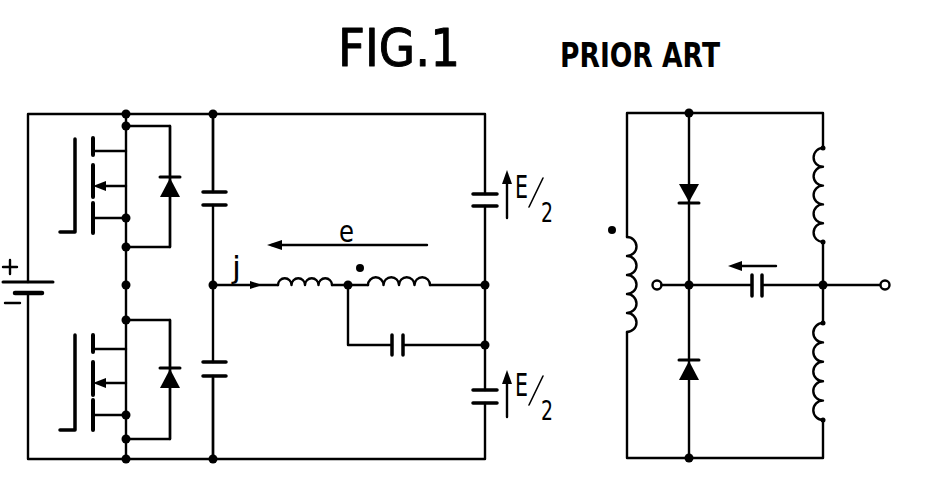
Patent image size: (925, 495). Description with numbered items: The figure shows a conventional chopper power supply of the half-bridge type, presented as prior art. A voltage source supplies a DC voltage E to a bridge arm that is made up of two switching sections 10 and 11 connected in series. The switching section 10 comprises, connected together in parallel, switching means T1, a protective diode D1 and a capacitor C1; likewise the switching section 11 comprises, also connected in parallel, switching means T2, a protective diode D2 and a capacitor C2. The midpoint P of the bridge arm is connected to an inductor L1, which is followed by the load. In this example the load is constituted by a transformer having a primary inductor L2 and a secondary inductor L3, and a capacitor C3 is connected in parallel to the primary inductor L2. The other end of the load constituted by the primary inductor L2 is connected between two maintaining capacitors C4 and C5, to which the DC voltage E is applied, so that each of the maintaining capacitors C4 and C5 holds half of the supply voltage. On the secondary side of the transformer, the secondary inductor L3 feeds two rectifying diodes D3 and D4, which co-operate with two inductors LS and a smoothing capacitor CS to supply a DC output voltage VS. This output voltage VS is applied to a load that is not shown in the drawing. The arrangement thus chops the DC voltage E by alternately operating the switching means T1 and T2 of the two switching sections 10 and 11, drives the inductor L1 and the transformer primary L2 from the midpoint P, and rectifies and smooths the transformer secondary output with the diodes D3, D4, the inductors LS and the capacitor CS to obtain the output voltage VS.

The switching means T1 is at (72, 178).
The switching means T2 is at (72, 392).
The protective diode D1 is at (180, 190).
The protective diode D2 is at (180, 390).
The DC voltage E is at (46, 282).
The midpoint P is at (120, 279).
The switching section 10 is at (230, 162).
The switching section 11 is at (236, 410).
The capacitor C1 is at (222, 190).
The capacitor C2 is at (226, 378).
The capacitor C3 is at (390, 353).
The maintaining capacitor C4 is at (472, 207).
The maintaining capacitor C5 is at (482, 405).
The inductor L1 is at (303, 294).
The primary inductor L2 is at (425, 283).
The rectifying diode D3 is at (700, 197).
The rectifying diode D4 is at (700, 373).
The secondary inductor L3 is at (620, 305).
The inductor LS is at (833, 222).
The smoothing capacitor CS is at (762, 297).
The DC output voltage VS is at (752, 254).